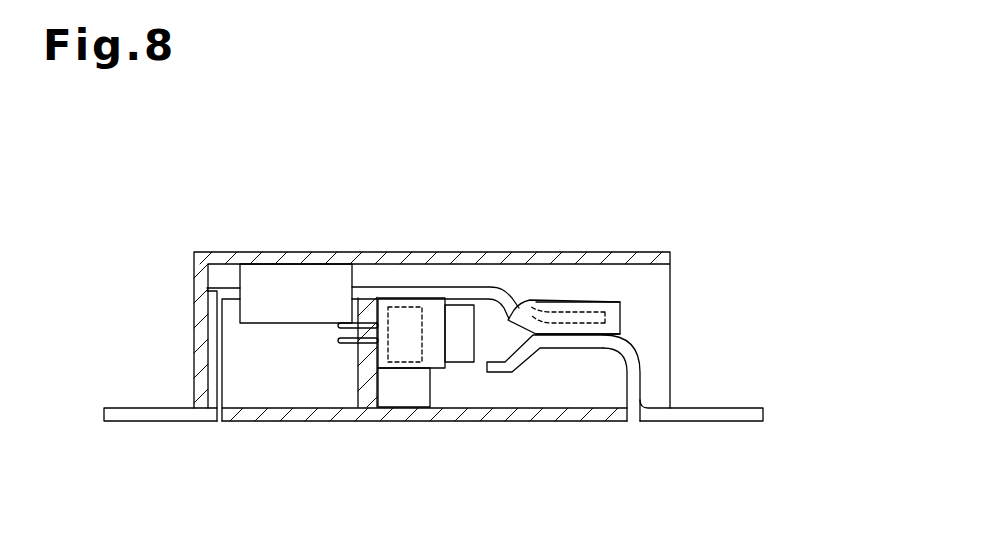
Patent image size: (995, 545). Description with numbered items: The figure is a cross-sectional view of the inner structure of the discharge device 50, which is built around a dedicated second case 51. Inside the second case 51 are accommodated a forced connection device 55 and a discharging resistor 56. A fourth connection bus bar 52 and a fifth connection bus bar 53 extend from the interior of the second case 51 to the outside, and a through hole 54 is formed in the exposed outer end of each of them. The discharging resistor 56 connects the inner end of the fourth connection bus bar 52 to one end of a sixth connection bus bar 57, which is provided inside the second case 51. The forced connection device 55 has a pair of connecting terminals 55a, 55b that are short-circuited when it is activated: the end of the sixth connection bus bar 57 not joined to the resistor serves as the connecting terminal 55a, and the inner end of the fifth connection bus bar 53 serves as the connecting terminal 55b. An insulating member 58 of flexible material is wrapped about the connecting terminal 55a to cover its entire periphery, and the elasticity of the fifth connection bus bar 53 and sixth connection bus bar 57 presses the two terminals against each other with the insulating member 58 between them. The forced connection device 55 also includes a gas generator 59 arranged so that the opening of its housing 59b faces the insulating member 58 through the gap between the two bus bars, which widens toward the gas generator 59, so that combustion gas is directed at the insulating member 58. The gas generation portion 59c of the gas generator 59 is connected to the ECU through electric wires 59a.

The discharge device 50 is at (573, 137).
The second case 51 is at (535, 252).
The fourth connection bus bar 52 is at (222, 372).
The fifth connection bus bar 53 is at (627, 393).
The through hole 54 is at (163, 415).
The forced connection device 55 is at (656, 327).
The connecting terminal 55a is at (590, 297).
The connecting terminal 55b is at (560, 348).
The discharging resistor 56 is at (297, 280).
The sixth connection bus bar 57 is at (414, 287).
The insulating member 58 is at (605, 302).
The gas generator 59 is at (482, 472).
The electric wires 59a is at (338, 327).
The housing 59b is at (430, 370).
The gas generation portion 59c is at (402, 362).